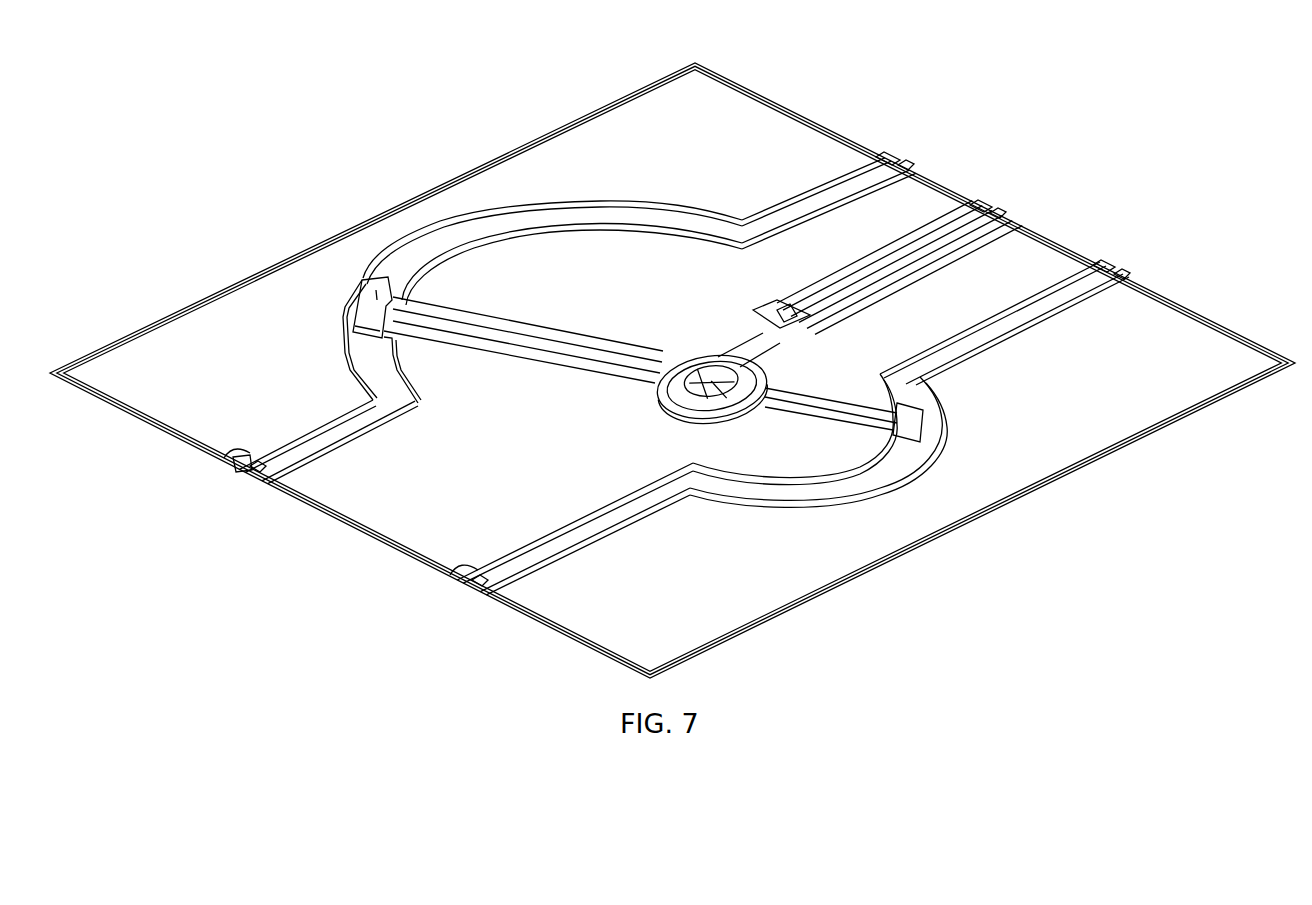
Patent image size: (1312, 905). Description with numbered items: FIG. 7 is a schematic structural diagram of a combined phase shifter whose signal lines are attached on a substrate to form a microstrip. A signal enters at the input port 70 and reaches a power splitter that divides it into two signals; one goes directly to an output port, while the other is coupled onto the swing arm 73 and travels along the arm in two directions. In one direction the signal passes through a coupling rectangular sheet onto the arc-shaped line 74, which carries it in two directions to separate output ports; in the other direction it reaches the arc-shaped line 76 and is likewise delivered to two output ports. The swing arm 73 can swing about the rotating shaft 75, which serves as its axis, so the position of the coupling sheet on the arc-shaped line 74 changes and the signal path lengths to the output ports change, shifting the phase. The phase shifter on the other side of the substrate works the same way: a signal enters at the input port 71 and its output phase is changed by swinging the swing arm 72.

The input port 70 is at (1023, 223).
The input port 71 is at (1003, 213).
The swing arm 72 is at (493, 350).
The swing arm 73 is at (513, 322).
The arc-shaped line 74 is at (345, 320).
The rotating shaft 75 is at (710, 393).
The arc-shaped line 76 is at (932, 417).